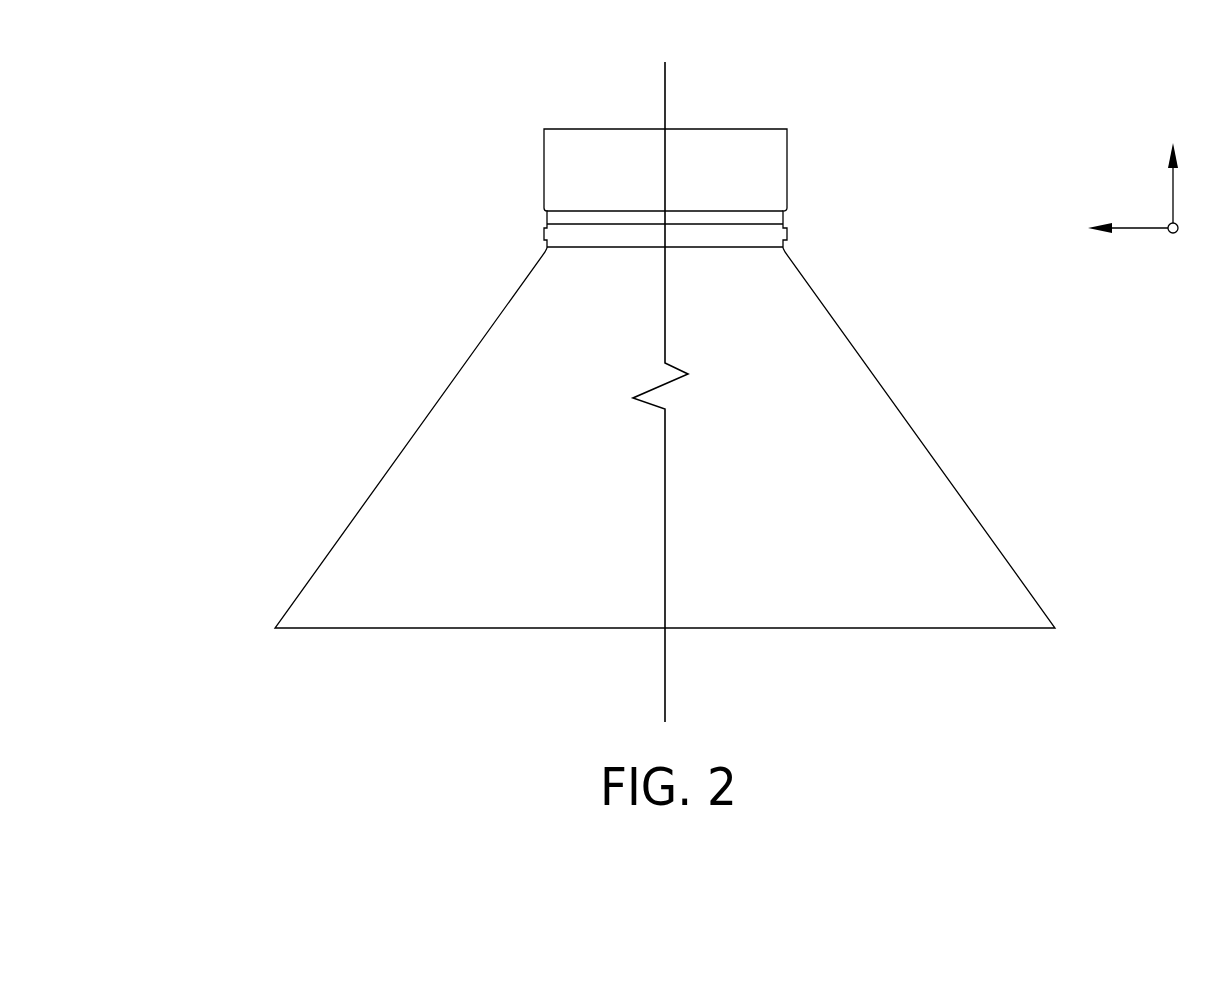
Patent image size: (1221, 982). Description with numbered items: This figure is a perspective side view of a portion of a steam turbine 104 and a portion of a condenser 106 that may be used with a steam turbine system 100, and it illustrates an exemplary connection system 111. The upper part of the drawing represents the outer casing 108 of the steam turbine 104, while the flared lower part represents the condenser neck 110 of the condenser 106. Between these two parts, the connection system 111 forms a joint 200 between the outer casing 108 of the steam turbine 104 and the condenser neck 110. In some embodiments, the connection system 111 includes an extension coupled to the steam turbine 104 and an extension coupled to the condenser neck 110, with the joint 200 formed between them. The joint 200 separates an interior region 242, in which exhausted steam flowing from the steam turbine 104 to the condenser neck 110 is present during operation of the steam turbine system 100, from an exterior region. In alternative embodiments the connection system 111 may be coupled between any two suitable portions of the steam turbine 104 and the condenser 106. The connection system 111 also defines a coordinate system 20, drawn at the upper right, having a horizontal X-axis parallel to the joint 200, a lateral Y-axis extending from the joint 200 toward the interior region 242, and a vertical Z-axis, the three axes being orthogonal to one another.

The coordinate system 20 is at (1120, 171).
The steam turbine system 100 is at (318, 170).
The steam turbine 104 is at (594, 145).
The outer casing 108 is at (550, 140).
The condenser 106 is at (641, 438).
The condenser neck 110 is at (315, 568).
The connection system 111 is at (520, 225).
The joint 200 is at (851, 256).
The interior region 242 is at (749, 227).